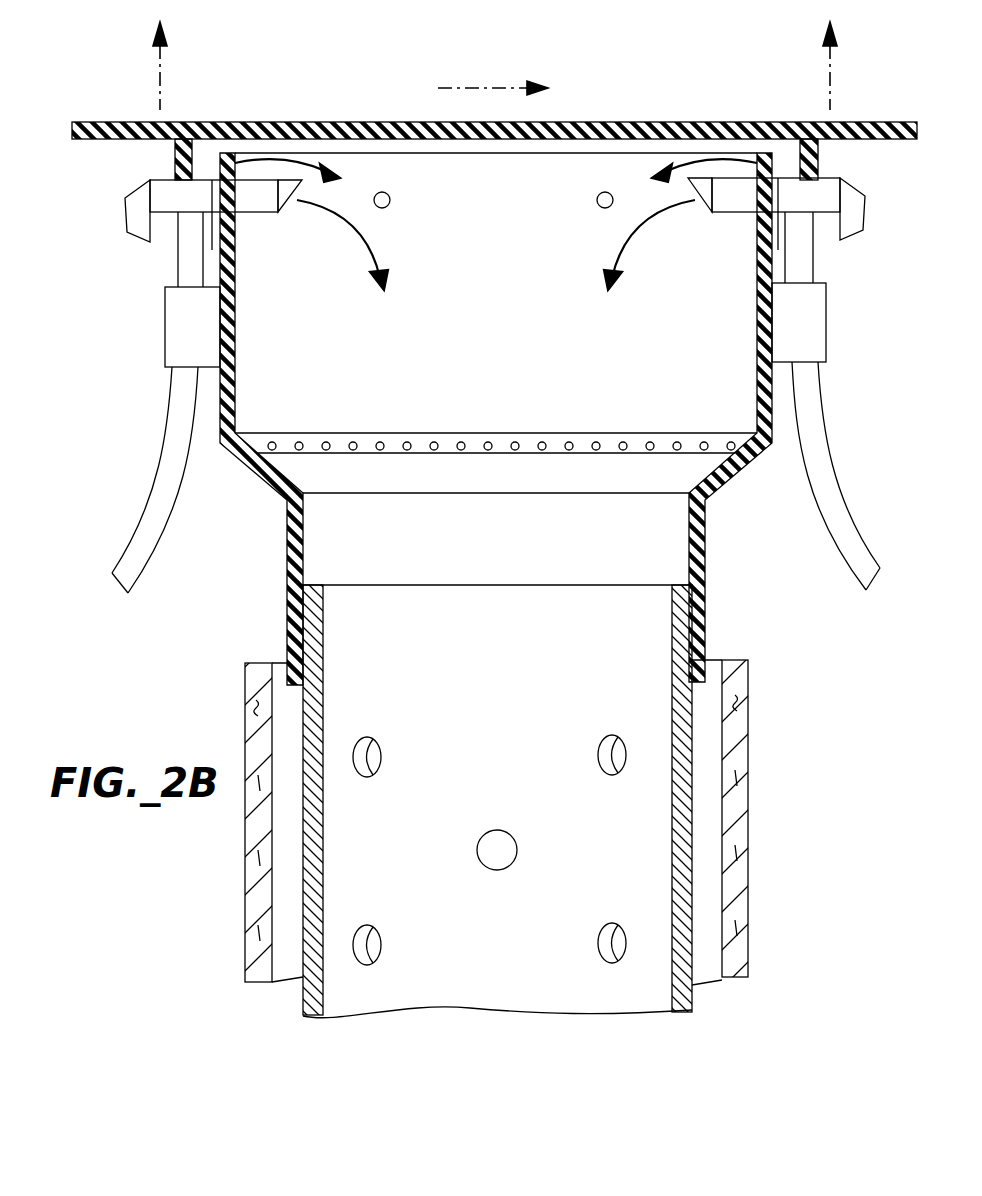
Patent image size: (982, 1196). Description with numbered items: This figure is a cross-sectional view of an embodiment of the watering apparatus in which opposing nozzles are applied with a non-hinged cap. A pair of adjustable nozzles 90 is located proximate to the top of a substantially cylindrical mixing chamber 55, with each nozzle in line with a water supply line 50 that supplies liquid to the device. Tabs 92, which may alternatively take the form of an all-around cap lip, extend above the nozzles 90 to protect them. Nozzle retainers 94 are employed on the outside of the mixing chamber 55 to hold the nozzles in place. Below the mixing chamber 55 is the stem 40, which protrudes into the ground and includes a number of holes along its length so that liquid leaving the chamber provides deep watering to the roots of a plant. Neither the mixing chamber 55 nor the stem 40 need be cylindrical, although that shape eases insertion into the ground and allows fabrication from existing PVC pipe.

The tabs 92 is at (122, 122).
The adjustable nozzles 90 is at (157, 180).
The nozzle retainers 94 is at (165, 338).
The water supply line 50 is at (165, 425).
The mixing chamber 55 is at (605, 371).
The stem 40 is at (690, 785).